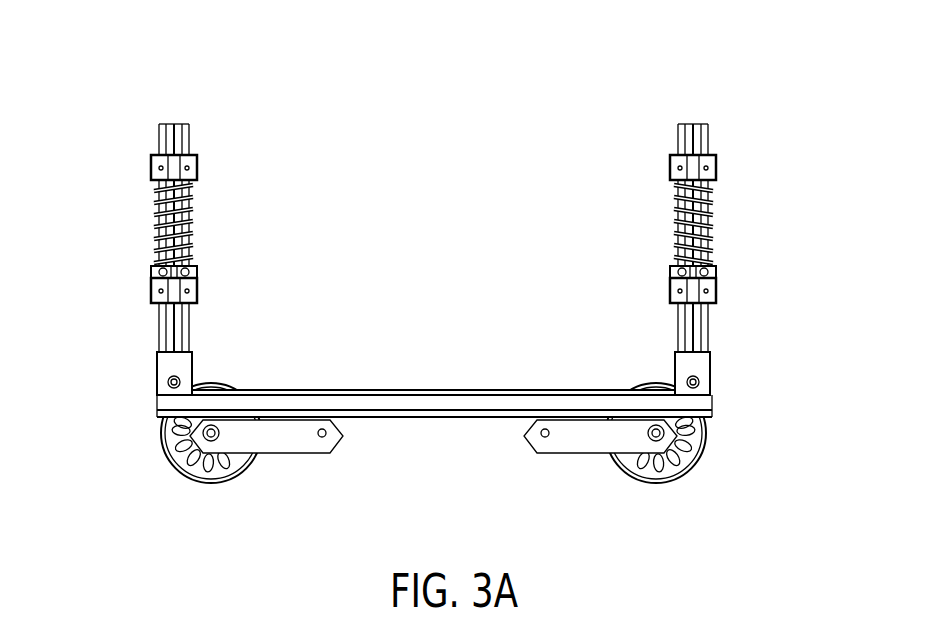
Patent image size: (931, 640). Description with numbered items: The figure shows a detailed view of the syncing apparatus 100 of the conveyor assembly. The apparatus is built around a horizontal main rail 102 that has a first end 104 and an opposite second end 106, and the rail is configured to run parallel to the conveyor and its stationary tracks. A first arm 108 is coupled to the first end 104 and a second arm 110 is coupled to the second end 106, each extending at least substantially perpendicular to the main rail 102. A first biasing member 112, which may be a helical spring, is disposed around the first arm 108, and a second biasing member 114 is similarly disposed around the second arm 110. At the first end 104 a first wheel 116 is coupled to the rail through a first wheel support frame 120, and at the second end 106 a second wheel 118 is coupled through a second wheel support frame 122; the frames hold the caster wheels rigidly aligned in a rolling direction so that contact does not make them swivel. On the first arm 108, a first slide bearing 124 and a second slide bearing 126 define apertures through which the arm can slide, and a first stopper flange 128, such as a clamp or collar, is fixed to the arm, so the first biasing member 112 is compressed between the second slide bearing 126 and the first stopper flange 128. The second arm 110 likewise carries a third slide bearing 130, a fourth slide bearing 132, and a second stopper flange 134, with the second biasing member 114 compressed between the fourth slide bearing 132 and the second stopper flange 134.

The syncing apparatus 100 is at (436, 274).
The main rail 102 is at (443, 402).
The first end 104 is at (163, 300).
The second end 106 is at (700, 299).
The first arm 108 is at (166, 147).
The second arm 110 is at (688, 140).
The first biasing member 112 is at (155, 217).
The second biasing member 114 is at (675, 217).
The first wheel 116 is at (225, 465).
The second wheel 118 is at (680, 474).
The first wheel support frame 120 is at (305, 440).
The second wheel support frame 122 is at (567, 440).
The first slide bearing 124 is at (152, 293).
The second slide bearing 126 is at (198, 168).
The first stopper flange 128 is at (153, 272).
The third slide bearing 130 is at (717, 293).
The fourth slide bearing 132 is at (710, 168).
The second stopper flange 134 is at (675, 273).